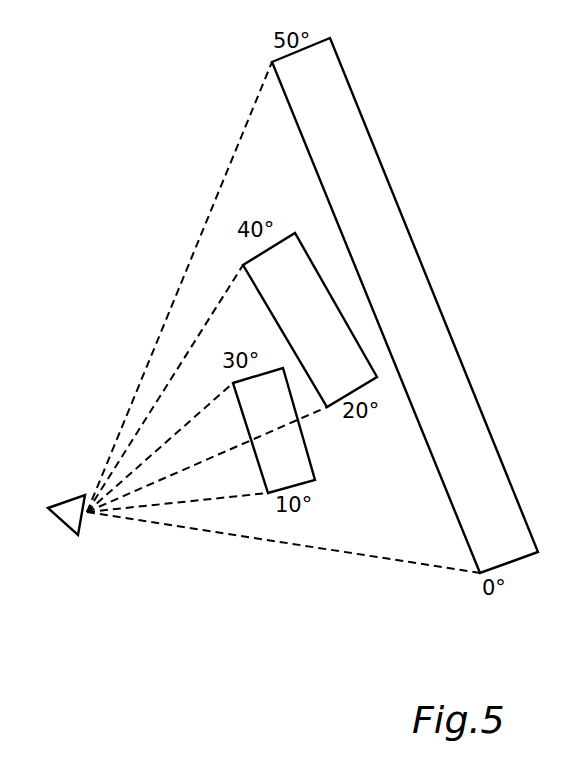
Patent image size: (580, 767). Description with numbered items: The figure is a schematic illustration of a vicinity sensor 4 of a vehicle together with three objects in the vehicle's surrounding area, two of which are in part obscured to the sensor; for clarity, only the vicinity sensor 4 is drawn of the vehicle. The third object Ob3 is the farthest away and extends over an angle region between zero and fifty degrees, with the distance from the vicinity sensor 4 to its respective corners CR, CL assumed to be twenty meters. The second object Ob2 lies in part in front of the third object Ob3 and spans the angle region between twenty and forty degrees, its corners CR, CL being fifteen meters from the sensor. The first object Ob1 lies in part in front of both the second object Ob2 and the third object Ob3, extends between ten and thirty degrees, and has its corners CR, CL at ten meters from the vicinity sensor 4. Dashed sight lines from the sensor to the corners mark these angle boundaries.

The vicinity sensor 4 is at (70, 510).
The first object Ob1 is at (297, 470).
The second object Ob2 is at (340, 350).
The third object Ob3 is at (395, 223).
The left corner CL is at (235, 384).
The right corner CR is at (327, 407).